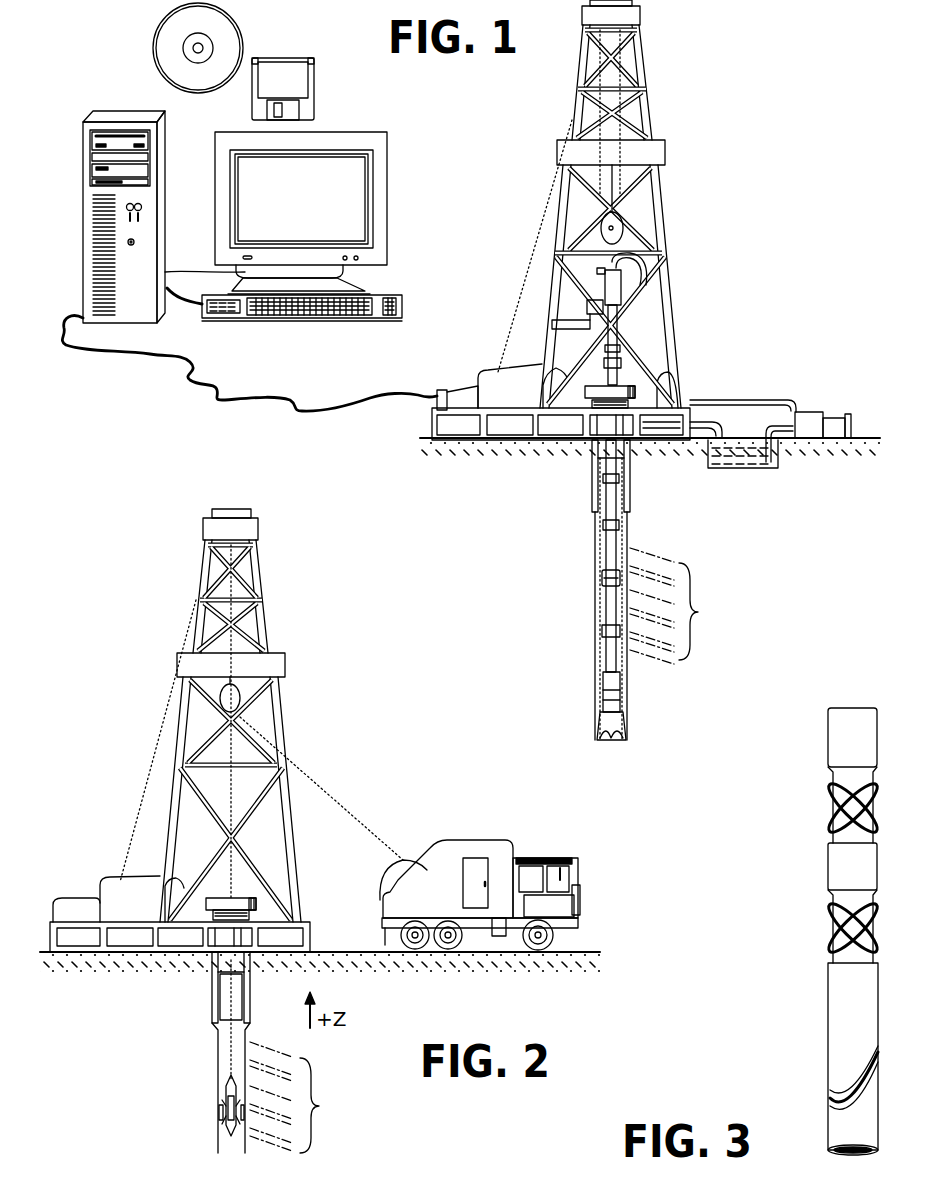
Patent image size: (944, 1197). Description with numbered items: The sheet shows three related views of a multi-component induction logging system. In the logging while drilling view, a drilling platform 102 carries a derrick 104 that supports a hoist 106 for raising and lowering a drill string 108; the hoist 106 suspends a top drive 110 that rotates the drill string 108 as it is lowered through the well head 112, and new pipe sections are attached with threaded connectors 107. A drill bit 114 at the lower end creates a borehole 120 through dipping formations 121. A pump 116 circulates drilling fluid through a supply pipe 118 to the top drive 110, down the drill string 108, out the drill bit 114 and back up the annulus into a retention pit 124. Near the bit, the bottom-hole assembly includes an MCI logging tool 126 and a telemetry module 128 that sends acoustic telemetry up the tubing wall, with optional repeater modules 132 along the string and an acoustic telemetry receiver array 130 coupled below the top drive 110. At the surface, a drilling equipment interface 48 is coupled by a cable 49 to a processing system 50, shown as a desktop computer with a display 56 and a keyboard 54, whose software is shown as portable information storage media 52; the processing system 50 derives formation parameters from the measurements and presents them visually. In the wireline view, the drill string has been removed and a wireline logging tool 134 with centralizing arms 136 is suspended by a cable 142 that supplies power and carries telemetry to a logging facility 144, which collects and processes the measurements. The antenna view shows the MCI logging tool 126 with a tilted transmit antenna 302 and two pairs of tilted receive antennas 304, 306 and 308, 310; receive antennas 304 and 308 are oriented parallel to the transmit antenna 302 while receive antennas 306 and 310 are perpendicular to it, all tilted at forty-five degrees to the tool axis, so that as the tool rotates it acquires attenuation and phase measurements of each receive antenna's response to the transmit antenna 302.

In FIG. 1, the drilling equipment interface 48 is at (442, 390).
In FIG. 1, the cable 49 is at (212, 390).
In FIG. 1, the processing system 50 is at (165, 242).
In FIG. 1, the portable information storage media 52 is at (243, 45).
In FIG. 1, the keyboard 54 is at (378, 319).
In FIG. 1, the display 56 is at (372, 266).
In FIG. 1, the drilling platform 102 is at (432, 412).
In FIG. 2, the drilling platform 102 is at (310, 932).
In FIG. 1, the derrick 104 is at (650, 115).
In FIG. 2, the derrick 104 is at (298, 889).
In FIG. 1, the hoist 106 is at (623, 223).
In FIG. 2, the hoist 106 is at (240, 694).
In FIG. 1, the threaded connectors 107 is at (603, 526).
In FIG. 1, the drill string 108 is at (614, 562).
In FIG. 1, the top drive 110 is at (612, 290).
In FIG. 1, the well head 112 is at (628, 385).
In FIG. 2, the well head 112 is at (252, 897).
In FIG. 1, the drill bit 114 is at (616, 732).
In FIG. 1, the pump 116 is at (815, 413).
In FIG. 1, the supply pipe 118 is at (755, 400).
In FIG. 1, the borehole 120 is at (600, 574).
In FIG. 1, the formations 121 is at (684, 606).
In FIG. 2, the formations 121 is at (305, 1097).
In FIG. 1, the retention pit 124 is at (725, 462).
In FIG. 1, the multi-component induction (MCI) logging tool 126 is at (603, 705).
In FIG. 3, the multi-component induction (MCI) logging tool 126 is at (828, 1146).
In FIG. 1, the telemetry module 128 is at (603, 688).
In FIG. 1, the acoustic telemetry receiver array 130 is at (608, 350).
In FIG. 1, the repeater modules 132 is at (606, 585).
In FIG. 2, the wireline logging tool 134 is at (228, 1098).
In FIG. 2, the centralizing arms 136 is at (220, 1113).
In FIG. 2, the cable 142 is at (300, 768).
In FIG. 2, the logging facility 144 is at (444, 842).
In FIG. 3, the tilted transmit antenna 302 is at (829, 1094).
In FIG. 3, the tilted receive antenna 304 is at (826, 941).
In FIG. 3, the tilted receive antenna 306 is at (826, 913).
In FIG. 3, the tilted receive antenna 308 is at (826, 820).
In FIG. 3, the tilted receive antenna 310 is at (826, 793).